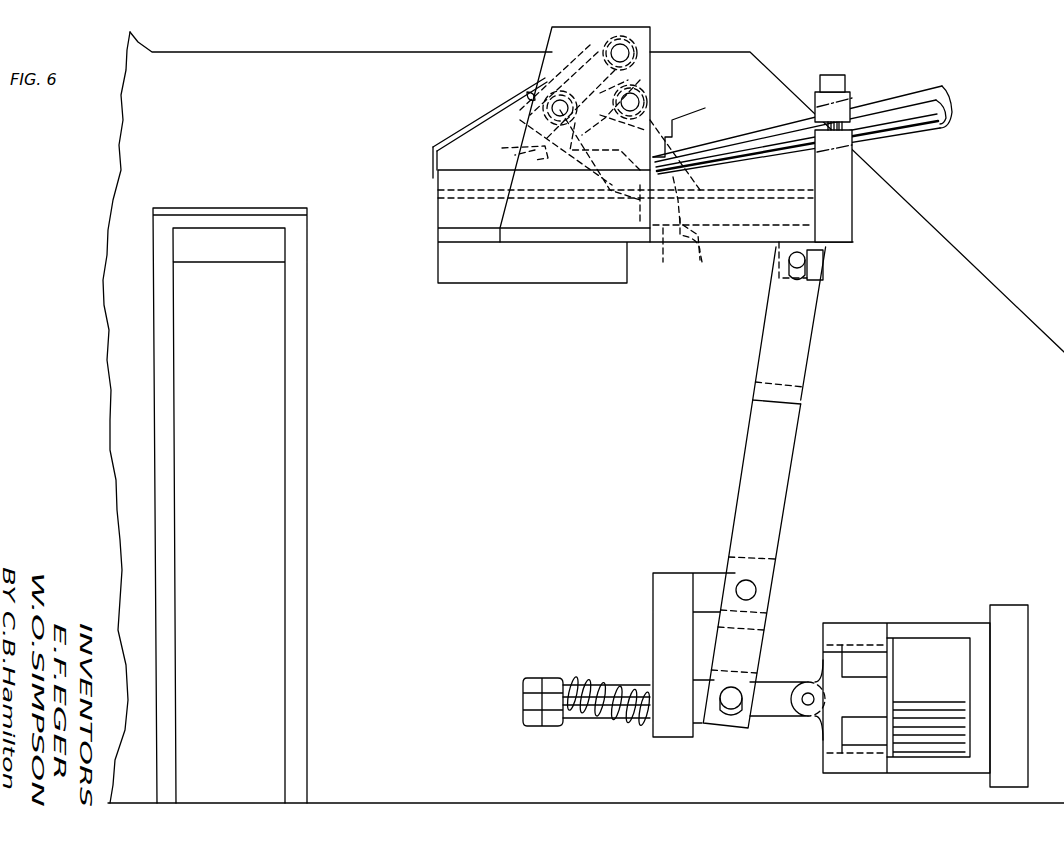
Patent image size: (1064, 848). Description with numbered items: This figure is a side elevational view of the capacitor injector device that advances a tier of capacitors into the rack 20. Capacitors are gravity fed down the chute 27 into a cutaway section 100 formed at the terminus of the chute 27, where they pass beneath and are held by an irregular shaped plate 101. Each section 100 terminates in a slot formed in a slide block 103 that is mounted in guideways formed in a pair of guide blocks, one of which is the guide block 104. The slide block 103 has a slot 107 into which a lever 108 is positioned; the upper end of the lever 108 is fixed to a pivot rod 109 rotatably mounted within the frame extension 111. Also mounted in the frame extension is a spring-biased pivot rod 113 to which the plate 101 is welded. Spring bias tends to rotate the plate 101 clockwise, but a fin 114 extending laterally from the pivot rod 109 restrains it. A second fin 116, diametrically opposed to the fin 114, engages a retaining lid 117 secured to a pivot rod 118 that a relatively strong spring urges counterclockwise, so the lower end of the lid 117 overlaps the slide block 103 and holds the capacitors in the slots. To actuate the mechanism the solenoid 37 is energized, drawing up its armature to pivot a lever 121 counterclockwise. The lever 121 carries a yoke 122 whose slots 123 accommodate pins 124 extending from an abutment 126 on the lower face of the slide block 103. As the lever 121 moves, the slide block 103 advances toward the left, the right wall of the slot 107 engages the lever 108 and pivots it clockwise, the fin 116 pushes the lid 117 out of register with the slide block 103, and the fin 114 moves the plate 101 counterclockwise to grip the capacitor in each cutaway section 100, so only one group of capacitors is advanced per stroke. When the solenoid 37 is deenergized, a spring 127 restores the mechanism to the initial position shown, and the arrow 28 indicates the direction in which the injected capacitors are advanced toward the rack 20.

The rack 20 is at (300, 503).
The chute 27 is at (943, 116).
The direction arrow 28 is at (637, 265).
The solenoid 37 is at (935, 660).
The cutaway section 100 is at (672, 130).
The irregular shaped plate 101 is at (508, 150).
The slide block 103 is at (445, 203).
The guide block 104 is at (452, 238).
The slot 107 is at (698, 251).
The lever 108 is at (655, 254).
The pivot rod 109 is at (555, 112).
The frame extension 111 is at (545, 78).
The spring-biased pivot rod 113 is at (640, 102).
The fin 114 is at (607, 91).
The second fin 116 is at (527, 96).
The retaining lid 117 is at (432, 178).
The pivot rod 118 is at (630, 53).
The lever 121 is at (762, 517).
The yoke 122 is at (797, 346).
The slot 123 is at (800, 276).
The pin 124 is at (800, 261).
The abutment 126 is at (790, 247).
The spring 127 is at (608, 686).